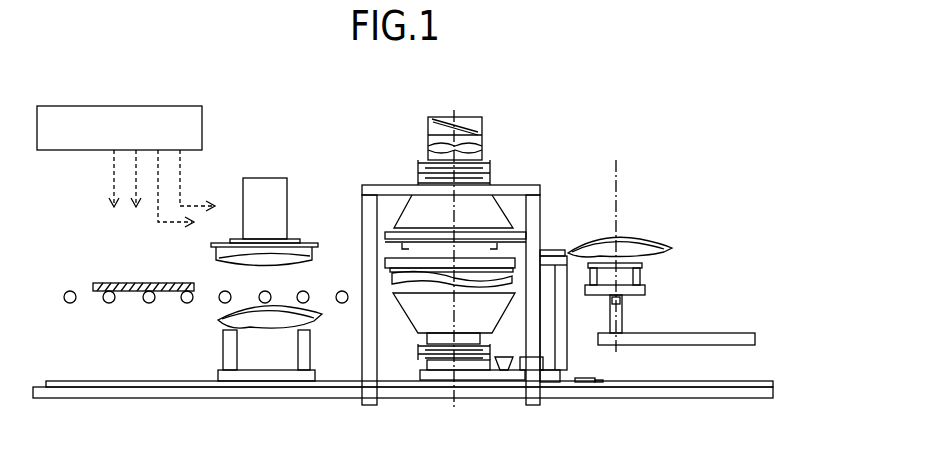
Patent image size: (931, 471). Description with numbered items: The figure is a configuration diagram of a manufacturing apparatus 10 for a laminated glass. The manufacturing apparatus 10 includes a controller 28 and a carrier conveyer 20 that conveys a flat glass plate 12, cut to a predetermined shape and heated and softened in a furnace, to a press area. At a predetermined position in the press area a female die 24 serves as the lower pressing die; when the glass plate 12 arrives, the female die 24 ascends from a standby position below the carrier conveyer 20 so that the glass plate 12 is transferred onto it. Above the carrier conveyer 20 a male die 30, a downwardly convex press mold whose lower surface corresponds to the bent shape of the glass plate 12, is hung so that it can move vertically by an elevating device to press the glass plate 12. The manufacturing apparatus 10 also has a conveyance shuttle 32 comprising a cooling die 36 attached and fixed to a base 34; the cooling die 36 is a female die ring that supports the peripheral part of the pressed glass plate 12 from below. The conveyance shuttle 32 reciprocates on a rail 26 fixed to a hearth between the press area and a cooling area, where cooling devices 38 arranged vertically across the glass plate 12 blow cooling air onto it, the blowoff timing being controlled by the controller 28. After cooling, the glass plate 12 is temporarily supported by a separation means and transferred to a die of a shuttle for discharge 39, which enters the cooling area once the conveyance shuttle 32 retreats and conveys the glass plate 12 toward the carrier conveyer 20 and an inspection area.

The manufacturing apparatus 10 is at (549, 168).
The glass plate 12 is at (100, 283).
The carrier conveyer 20 is at (220, 291).
The female die 24 is at (216, 312).
The rail 26 is at (197, 381).
The controller 28 is at (143, 107).
The male die 30 is at (311, 249).
The conveyance shuttle 32 is at (548, 258).
The base 34 is at (425, 255).
The cooling die 36 is at (405, 284).
The cooling device 38 is at (508, 190).
The shuttle for discharge 39 is at (641, 278).